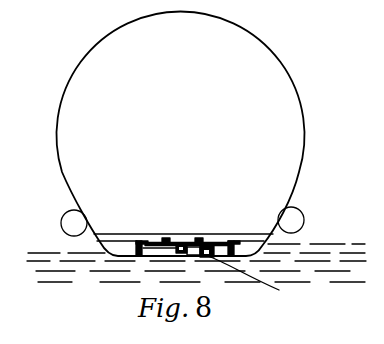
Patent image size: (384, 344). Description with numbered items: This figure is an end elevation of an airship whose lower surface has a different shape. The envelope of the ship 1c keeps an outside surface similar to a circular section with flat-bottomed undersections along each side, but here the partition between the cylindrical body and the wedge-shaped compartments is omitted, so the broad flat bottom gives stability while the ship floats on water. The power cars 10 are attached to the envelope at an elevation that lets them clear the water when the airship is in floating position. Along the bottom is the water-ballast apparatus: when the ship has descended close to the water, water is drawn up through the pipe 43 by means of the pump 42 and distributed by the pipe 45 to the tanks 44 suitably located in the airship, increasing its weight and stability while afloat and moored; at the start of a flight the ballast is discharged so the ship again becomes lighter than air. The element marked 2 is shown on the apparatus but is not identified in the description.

The airship envelope 1c is at (180, 133).
The shaft 2 is at (188, 234).
The power cars 10 is at (64, 215).
The pump 42 is at (188, 245).
The pipe 43 is at (256, 280).
The tanks 44 is at (116, 240).
The pipe 45 is at (150, 242).